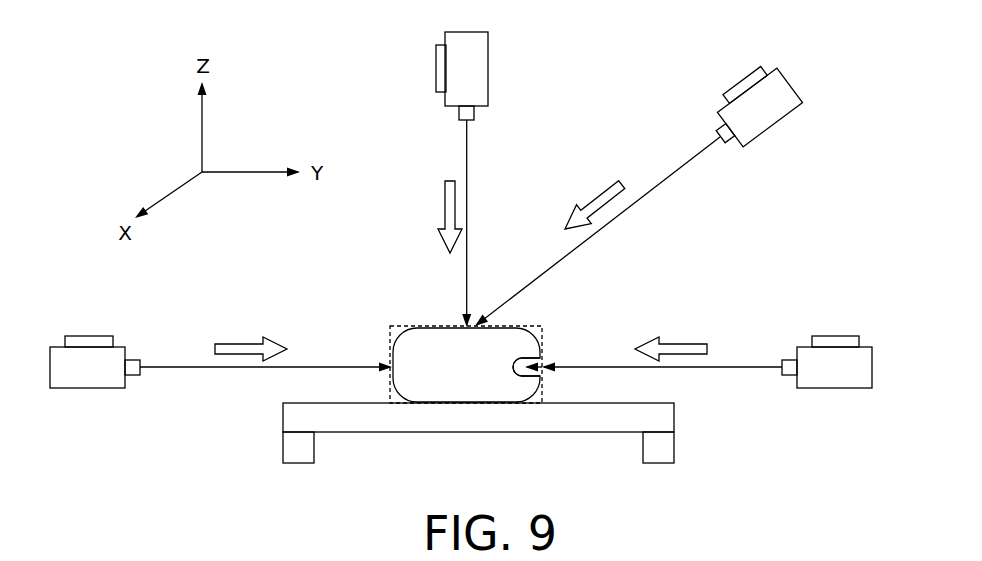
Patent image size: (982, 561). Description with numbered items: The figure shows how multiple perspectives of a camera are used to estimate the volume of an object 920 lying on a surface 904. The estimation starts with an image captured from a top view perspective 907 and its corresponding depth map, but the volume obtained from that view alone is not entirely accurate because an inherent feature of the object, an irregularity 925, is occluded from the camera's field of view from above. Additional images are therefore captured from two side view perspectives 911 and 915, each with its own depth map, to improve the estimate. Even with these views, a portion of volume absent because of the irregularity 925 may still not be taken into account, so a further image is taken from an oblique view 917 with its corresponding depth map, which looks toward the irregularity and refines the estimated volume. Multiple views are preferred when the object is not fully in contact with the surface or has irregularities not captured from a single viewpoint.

The surface 904 is at (530, 434).
The top view perspective 907 is at (443, 208).
The side view perspective 911 is at (240, 343).
The side view perspective 915 is at (685, 343).
The oblique view 917 is at (600, 197).
The object 920 is at (449, 378).
The irregularity 925 is at (545, 362).